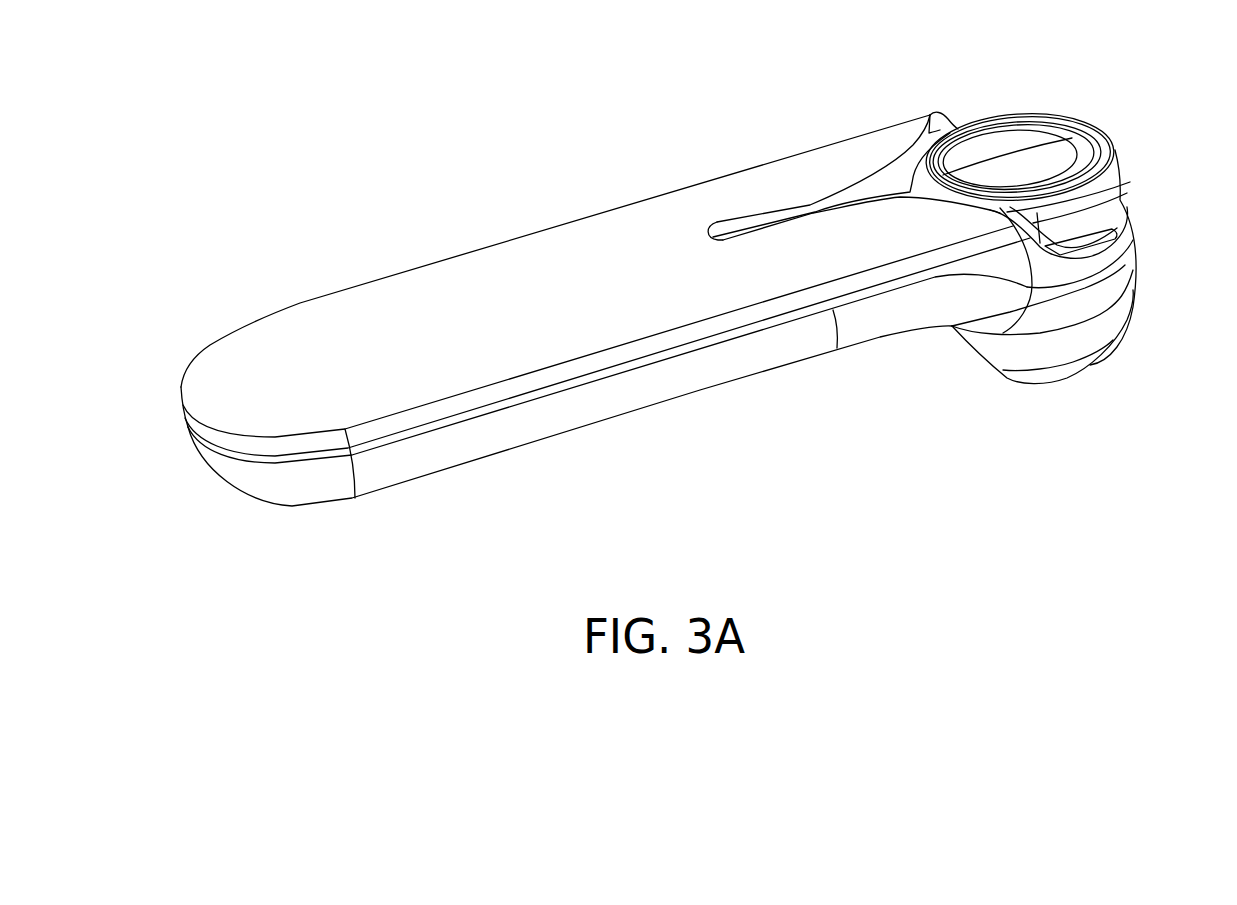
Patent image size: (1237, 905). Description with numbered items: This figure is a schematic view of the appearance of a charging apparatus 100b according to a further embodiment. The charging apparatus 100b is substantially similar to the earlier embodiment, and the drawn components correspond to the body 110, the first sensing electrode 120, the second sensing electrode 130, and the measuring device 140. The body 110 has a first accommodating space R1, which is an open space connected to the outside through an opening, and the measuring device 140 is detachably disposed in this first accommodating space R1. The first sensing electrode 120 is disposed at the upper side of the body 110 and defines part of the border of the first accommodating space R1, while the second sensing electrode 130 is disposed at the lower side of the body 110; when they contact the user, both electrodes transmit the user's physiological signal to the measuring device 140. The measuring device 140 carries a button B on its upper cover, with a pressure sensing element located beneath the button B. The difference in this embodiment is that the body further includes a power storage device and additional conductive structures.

The charging apparatus 100b is at (1160, 558).
The body 110 is at (1123, 287).
The first sensing electrode 120 is at (347, 327).
The second sensing electrode 130 is at (1057, 380).
The measuring device 140 is at (1115, 172).
The button B is at (1005, 145).
The first accommodating space R1 is at (818, 205).